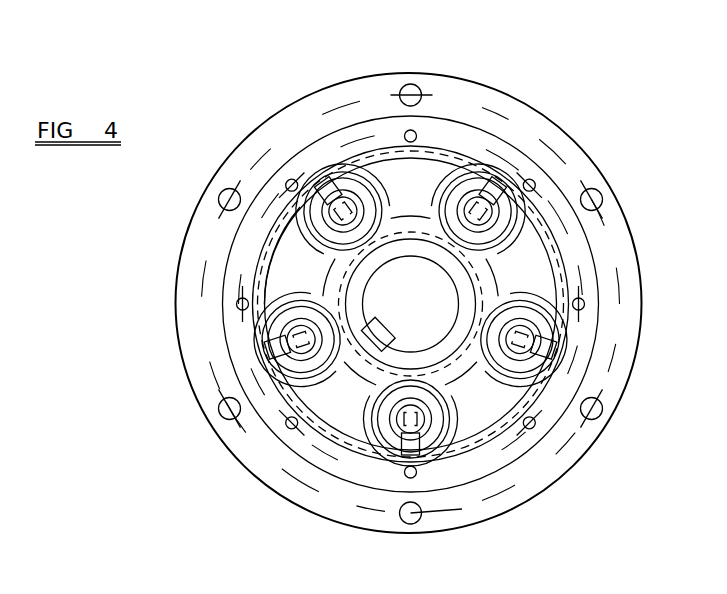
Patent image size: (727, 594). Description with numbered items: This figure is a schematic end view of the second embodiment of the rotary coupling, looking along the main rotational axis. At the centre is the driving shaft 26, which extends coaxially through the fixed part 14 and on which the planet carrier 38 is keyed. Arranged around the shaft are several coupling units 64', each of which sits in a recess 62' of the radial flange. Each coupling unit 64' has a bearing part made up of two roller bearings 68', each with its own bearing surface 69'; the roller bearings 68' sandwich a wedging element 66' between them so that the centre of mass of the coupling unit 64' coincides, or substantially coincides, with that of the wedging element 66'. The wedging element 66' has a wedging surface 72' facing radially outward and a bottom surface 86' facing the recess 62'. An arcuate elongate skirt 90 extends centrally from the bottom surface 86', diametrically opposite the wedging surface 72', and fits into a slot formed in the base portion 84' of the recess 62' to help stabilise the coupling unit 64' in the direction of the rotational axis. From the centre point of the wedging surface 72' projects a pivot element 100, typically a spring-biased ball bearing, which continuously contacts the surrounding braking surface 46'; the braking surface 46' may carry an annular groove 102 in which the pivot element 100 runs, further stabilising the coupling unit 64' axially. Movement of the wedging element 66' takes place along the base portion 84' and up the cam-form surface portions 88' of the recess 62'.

The fixed part 14 is at (298, 150).
The driving shaft 26 is at (405, 277).
The planet carrier 38 is at (420, 167).
The braking surface 46' is at (315, 280).
The recess 62' is at (226, 322).
The coupling unit 64' is at (458, 303).
The wedging element 66' is at (231, 330).
The roller bearings 68' is at (351, 476).
The bearing surfaces 69' is at (496, 479).
The wedging surface 72' is at (238, 356).
The base portion 84' is at (355, 304).
The bottom surface 86' is at (375, 325).
The cam-form surface portions 88' is at (210, 339).
The skirt 90 is at (480, 383).
The pivot element 100 is at (280, 190).
The annular groove 102 is at (357, 162).